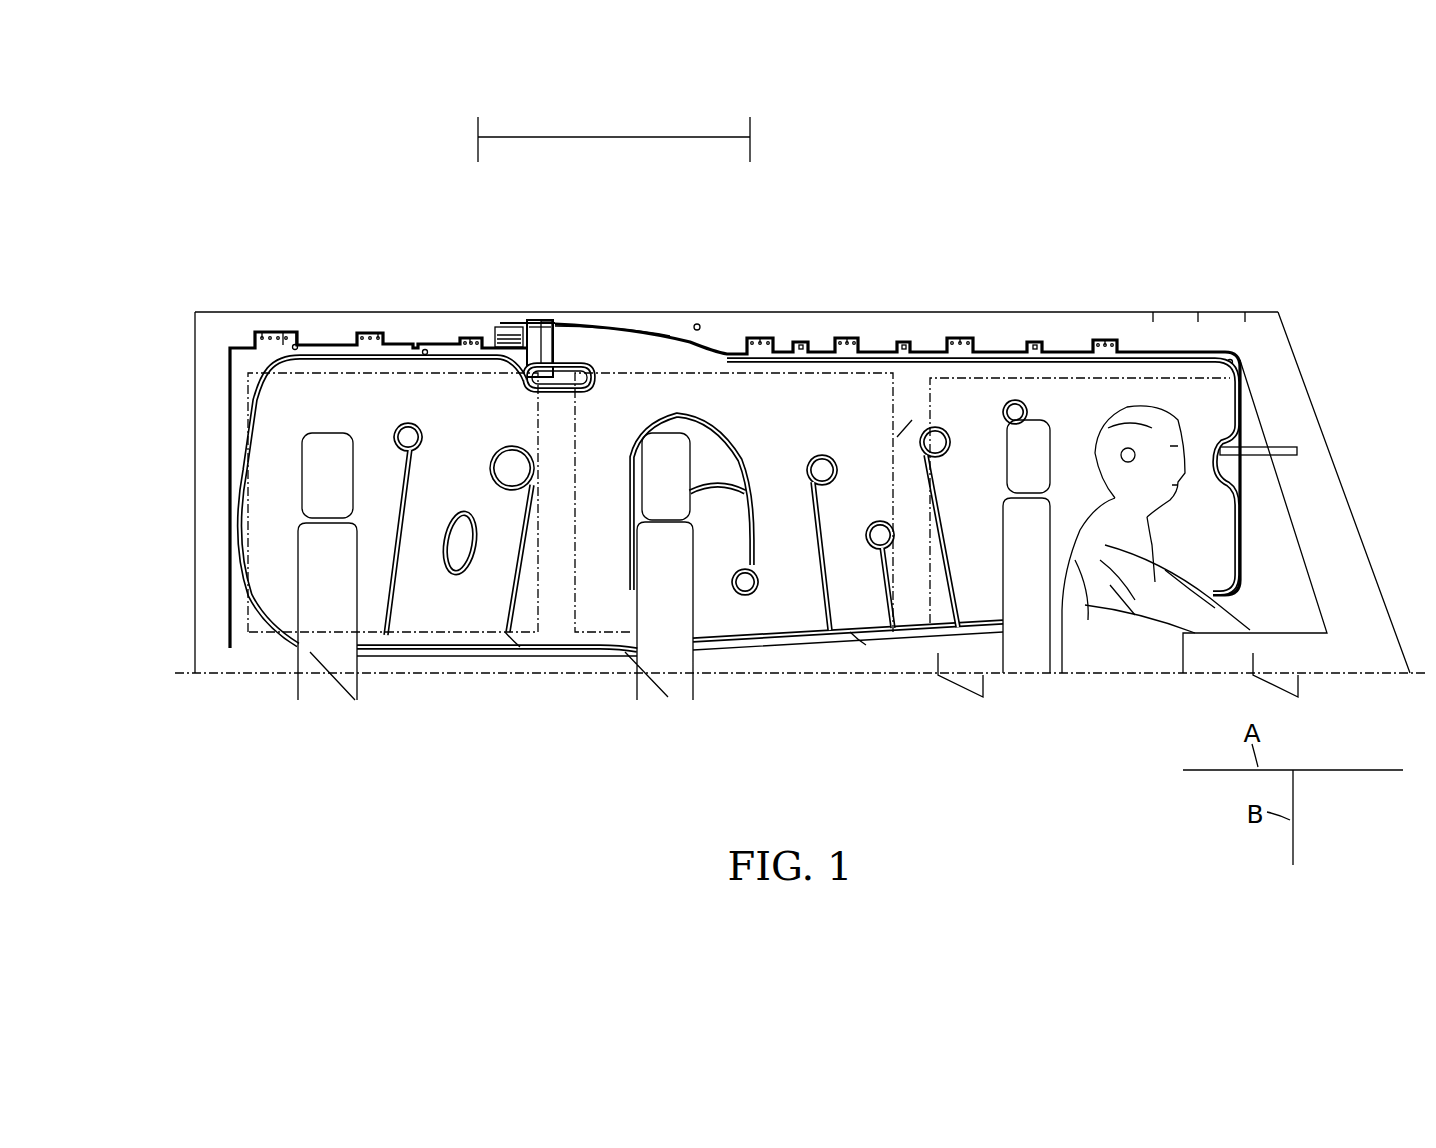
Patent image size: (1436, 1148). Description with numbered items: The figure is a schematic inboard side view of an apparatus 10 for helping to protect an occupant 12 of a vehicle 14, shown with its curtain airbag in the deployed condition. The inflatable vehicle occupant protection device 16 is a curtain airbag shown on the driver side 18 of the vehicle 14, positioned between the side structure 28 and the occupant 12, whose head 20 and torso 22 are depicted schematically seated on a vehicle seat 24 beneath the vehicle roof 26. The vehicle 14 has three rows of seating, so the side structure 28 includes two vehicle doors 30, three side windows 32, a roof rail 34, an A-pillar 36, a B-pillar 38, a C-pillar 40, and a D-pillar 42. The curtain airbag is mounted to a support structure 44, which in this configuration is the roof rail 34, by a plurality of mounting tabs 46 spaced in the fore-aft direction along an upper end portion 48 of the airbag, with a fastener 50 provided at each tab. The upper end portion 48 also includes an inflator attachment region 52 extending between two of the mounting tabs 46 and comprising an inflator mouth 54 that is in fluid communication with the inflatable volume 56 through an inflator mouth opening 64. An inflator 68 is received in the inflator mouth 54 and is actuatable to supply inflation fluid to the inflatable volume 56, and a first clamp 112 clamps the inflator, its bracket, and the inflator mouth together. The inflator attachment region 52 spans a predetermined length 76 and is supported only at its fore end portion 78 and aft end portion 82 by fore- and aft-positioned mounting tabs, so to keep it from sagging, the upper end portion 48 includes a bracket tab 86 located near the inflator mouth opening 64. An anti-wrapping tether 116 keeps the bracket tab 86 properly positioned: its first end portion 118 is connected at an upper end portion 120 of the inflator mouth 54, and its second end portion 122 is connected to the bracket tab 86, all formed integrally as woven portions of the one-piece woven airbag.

The apparatus 10 is at (1253, 363).
The occupant 12 is at (1113, 643).
The vehicle 14 is at (212, 331).
The inflatable vehicle occupant protection device 16 is at (243, 367).
The driver side 18 is at (247, 665).
The head 20 is at (1117, 417).
The torso 22 is at (1007, 488).
The vehicle seat 24 is at (323, 643).
The vehicle roof 26 is at (1198, 320).
The side structure 28 is at (1153, 320).
The vehicle door 30 is at (790, 643).
The side window 32 is at (522, 642).
The roof rail 34 is at (890, 350).
The A-pillar 36 is at (1325, 483).
The B-pillar 38 is at (892, 446).
The C-pillar 40 is at (565, 612).
The D-pillar 42 is at (210, 407).
The support structure 44 is at (1245, 320).
The mounting tabs 46 is at (232, 311).
The upper end portion 48 is at (1013, 337).
The fastener 50 is at (258, 311).
The inflator attachment region 52 is at (678, 340).
The inflator mouth 54 is at (560, 320).
The inflatable volume 56 is at (248, 565).
The inflator mouth opening 64 is at (557, 340).
The inflator 68 is at (503, 318).
The predetermined length 76 is at (620, 140).
The fore end portion 78 is at (728, 350).
The aft end portion 82 is at (467, 325).
The bracket tab 86 is at (517, 352).
The first clamp 112 is at (618, 315).
The anti-wrapping tether 116 is at (540, 320).
The first end portion 118 is at (547, 320).
The upper end portion 120 is at (600, 320).
The second end portion 122 is at (550, 345).